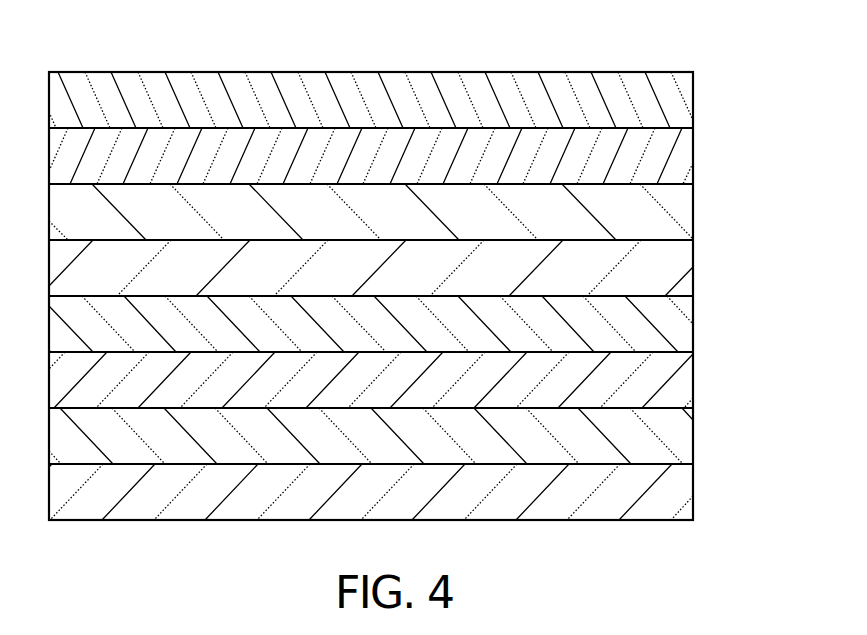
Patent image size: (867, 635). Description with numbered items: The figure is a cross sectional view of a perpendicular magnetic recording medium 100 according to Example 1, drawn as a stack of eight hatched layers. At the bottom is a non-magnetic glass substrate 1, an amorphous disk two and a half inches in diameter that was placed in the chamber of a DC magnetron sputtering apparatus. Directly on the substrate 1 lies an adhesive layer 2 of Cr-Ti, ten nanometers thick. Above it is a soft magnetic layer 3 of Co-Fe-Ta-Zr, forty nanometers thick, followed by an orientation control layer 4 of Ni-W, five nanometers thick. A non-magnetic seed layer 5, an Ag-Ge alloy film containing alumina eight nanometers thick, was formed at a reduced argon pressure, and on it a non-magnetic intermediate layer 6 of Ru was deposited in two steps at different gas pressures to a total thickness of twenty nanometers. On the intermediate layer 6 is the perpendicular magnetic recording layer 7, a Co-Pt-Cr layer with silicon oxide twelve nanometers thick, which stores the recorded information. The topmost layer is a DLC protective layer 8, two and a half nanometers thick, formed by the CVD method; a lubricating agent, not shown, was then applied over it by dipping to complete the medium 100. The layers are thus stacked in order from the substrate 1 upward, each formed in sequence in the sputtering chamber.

The perpendicular magnetic recording medium 100 is at (661, 56).
The non-magnetic glass substrate 1 is at (683, 490).
The adhesive layer 2 is at (683, 434).
The soft magnetic layer 3 is at (683, 378).
The orientation control layer 4 is at (683, 322).
The non-magnetic seed layer 5 is at (683, 266).
The non-magnetic intermediate layer 6 is at (683, 210).
The perpendicular magnetic recording layer 7 is at (683, 154).
The DLC protective layer 8 is at (683, 98).